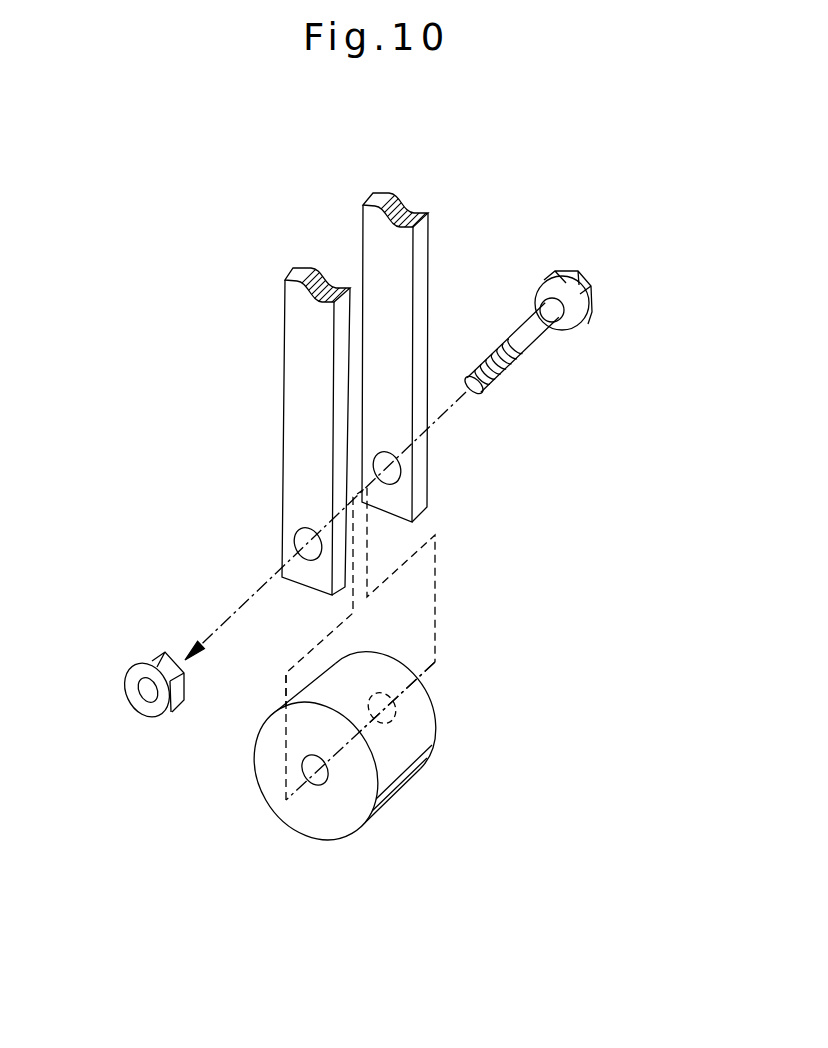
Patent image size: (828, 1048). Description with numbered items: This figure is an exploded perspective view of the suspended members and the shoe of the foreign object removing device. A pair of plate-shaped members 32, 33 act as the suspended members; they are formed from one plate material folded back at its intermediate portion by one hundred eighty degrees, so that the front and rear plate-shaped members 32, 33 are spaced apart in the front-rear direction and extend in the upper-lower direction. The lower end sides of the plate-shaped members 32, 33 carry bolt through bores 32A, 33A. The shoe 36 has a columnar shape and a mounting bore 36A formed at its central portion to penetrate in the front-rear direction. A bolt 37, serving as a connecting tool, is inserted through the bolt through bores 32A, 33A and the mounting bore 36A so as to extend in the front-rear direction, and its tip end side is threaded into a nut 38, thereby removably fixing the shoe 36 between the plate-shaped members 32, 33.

The plate-shaped member 32 is at (293, 370).
The plate-shaped member 33 is at (424, 240).
The bolt through bore 32A is at (300, 540).
The bolt through bore 33A is at (400, 478).
The shoe 36 is at (418, 718).
The mounting bore 36A is at (322, 786).
The bolt 37 is at (590, 307).
The nut 38 is at (143, 657).